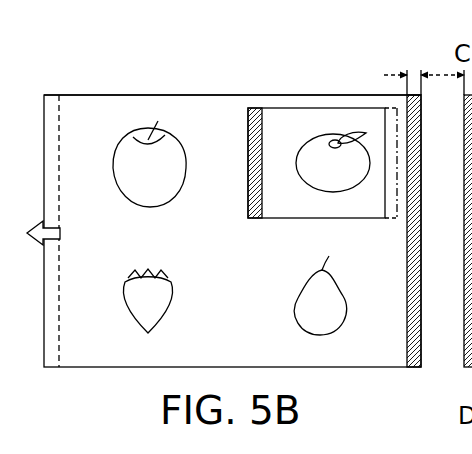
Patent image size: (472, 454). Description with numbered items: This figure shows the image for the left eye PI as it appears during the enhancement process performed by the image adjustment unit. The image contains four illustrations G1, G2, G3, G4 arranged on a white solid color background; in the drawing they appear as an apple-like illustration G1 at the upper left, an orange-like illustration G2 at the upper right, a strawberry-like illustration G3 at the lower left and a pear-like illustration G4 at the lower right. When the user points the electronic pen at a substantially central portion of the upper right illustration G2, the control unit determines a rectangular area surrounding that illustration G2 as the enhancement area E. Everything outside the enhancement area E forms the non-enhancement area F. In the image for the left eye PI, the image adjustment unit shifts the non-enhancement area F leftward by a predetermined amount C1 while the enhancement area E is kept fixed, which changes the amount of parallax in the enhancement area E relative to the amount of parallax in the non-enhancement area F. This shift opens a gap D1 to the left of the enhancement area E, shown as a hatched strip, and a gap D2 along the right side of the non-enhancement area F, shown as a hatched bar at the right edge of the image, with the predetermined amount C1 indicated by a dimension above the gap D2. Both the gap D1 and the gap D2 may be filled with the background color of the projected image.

The image for the left eye PI is at (95, 76).
The non-enhancement area F is at (199, 122).
The enhancement area E is at (304, 120).
The gap D1 is at (247, 192).
The gap D2 is at (414, 370).
The predetermined amount C1 is at (412, 67).
The illustration G1 is at (106, 151).
The illustration G2 is at (352, 199).
The illustration G3 is at (108, 274).
The illustration G4 is at (286, 276).